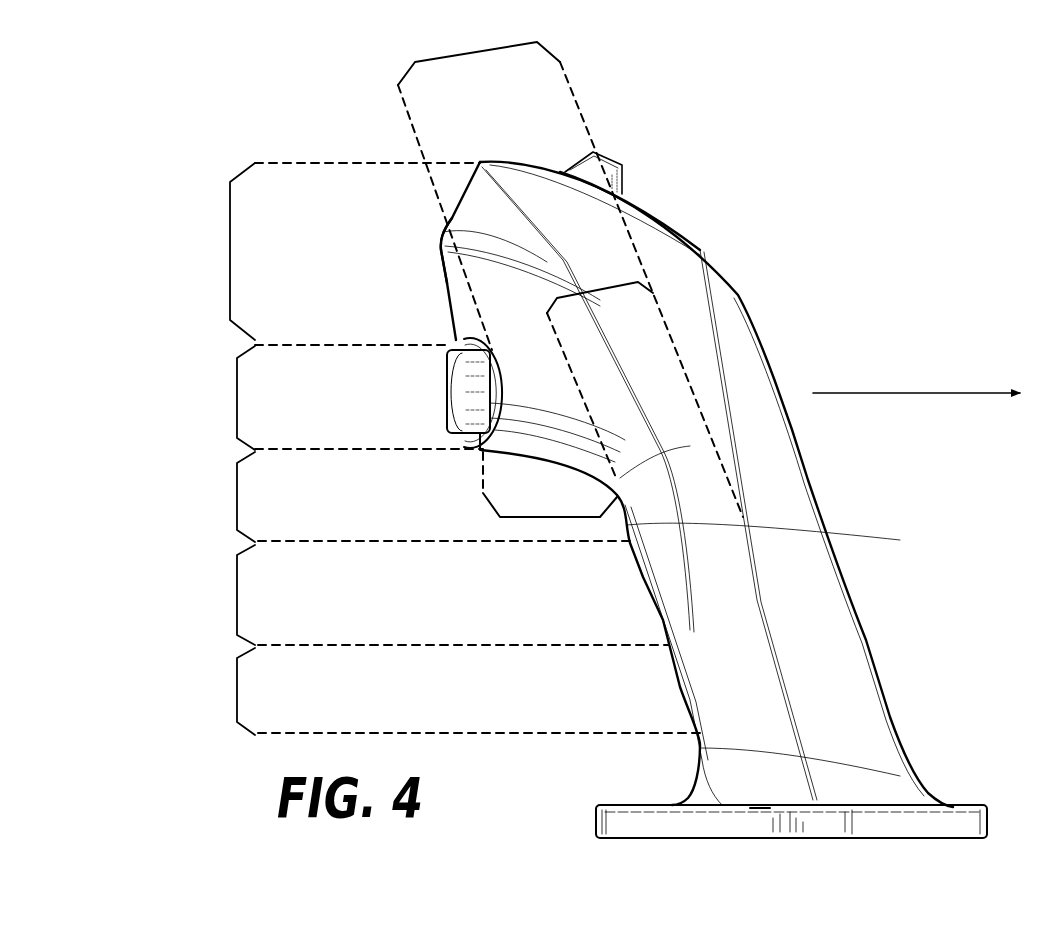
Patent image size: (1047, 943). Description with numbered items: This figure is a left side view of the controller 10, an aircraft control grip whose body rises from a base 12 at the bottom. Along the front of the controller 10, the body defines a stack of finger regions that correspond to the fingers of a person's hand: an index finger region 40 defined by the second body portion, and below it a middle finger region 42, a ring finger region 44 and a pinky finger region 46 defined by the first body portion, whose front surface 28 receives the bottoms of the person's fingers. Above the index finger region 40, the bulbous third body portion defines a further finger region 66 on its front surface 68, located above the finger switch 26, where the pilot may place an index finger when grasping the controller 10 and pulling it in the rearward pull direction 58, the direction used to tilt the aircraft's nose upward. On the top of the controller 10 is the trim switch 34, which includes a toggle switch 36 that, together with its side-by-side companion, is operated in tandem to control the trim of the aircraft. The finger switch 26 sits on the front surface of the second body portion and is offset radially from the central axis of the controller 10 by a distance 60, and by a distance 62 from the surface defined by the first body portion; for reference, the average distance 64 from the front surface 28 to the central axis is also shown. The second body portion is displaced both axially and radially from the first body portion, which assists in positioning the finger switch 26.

The controller 10 is at (800, 291).
The base 12 is at (655, 803).
The finger switch 26 is at (466, 411).
The front surface 28 is at (654, 594).
The trim switch 34 is at (629, 182).
The toggle switch 36 is at (607, 163).
The index finger region 40 is at (237, 400).
The middle finger region 42 is at (237, 488).
The ring finger region 44 is at (237, 583).
The pinky finger region 46 is at (237, 697).
The rearward pull direction 58 is at (918, 394).
The distance 60 is at (472, 52).
The distance 62 is at (543, 517).
The average distance 64 is at (594, 291).
The finger region 66 is at (230, 241).
The front surface 68 is at (448, 284).